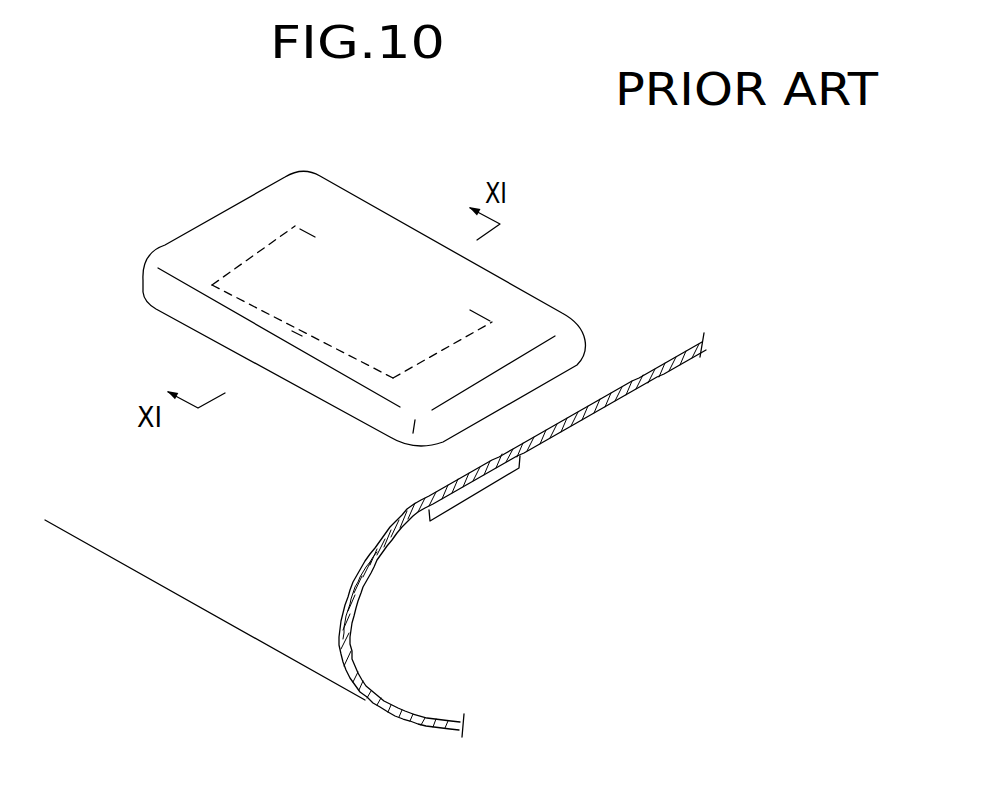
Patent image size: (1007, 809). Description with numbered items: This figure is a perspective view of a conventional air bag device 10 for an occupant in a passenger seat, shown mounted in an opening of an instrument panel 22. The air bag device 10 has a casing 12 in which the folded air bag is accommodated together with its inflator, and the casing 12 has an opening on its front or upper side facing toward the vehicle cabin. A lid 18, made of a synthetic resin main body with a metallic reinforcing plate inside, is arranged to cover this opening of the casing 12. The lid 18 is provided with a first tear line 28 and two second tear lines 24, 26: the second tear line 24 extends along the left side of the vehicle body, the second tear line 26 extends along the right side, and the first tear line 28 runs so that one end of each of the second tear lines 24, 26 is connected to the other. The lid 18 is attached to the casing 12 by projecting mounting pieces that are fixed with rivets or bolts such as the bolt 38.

The air bag device 10 is at (334, 261).
The lid 18 is at (181, 254).
The second tear line 24 is at (288, 228).
The second tear line 26 is at (453, 333).
The first tear line 28 is at (297, 335).
The rivet or bolt 38 is at (357, 333).
The instrument panel 22 is at (642, 347).
The casing 12 is at (482, 492).